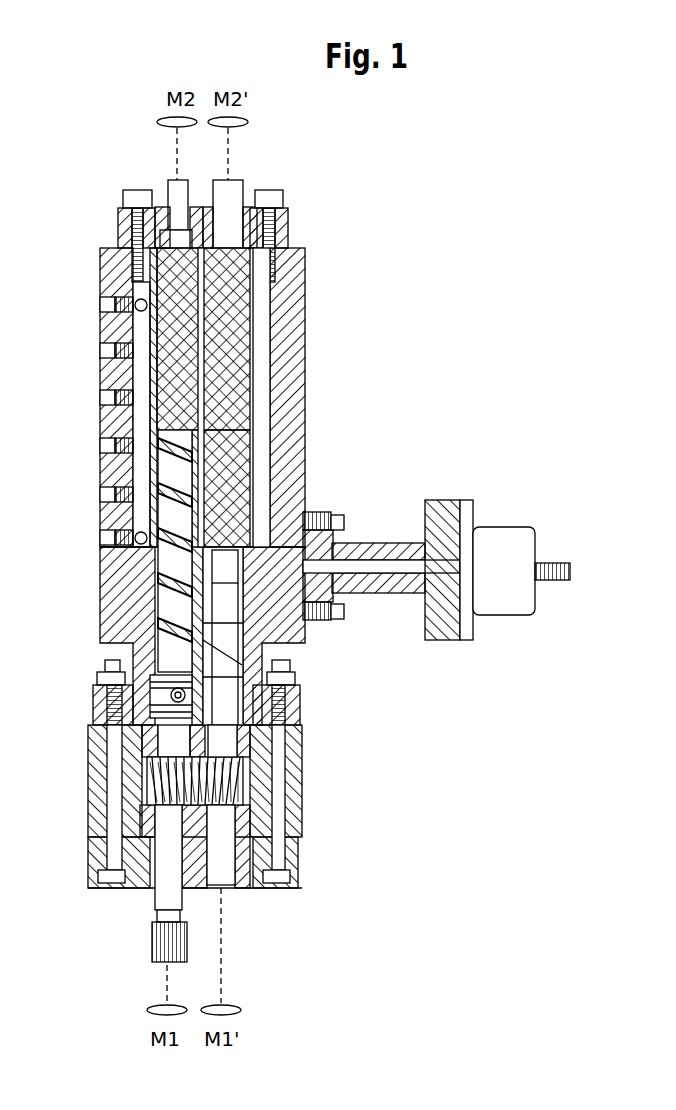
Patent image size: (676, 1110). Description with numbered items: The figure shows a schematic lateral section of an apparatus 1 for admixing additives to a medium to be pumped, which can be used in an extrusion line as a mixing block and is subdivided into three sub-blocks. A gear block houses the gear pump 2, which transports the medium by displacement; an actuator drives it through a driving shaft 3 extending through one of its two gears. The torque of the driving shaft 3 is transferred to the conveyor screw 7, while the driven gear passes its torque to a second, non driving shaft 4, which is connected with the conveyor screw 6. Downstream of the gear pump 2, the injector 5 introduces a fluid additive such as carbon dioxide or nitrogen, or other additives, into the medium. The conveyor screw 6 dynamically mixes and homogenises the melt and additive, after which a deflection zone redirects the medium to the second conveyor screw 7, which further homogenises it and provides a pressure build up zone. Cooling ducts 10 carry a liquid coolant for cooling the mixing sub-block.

The apparatus 1 is at (427, 228).
The gear pump 2 is at (302, 792).
The driving shaft 3 is at (167, 893).
The non driving shaft 4 is at (223, 873).
The injector 5 is at (568, 483).
The conveyor screw 6 is at (272, 392).
The conveyor screw 7 is at (160, 380).
The cooling ducts 10 is at (100, 352).